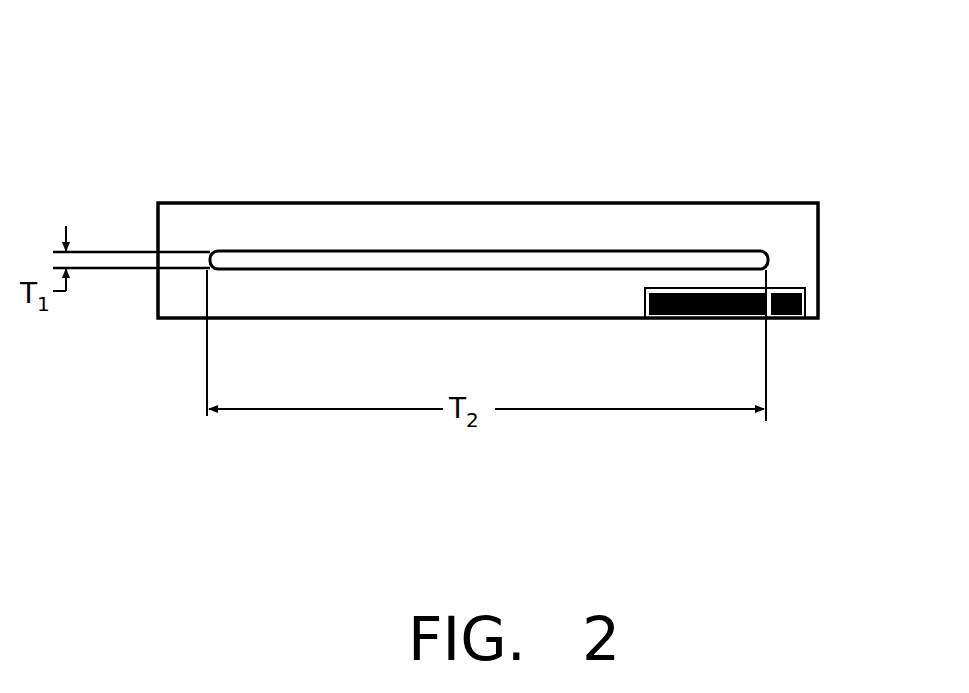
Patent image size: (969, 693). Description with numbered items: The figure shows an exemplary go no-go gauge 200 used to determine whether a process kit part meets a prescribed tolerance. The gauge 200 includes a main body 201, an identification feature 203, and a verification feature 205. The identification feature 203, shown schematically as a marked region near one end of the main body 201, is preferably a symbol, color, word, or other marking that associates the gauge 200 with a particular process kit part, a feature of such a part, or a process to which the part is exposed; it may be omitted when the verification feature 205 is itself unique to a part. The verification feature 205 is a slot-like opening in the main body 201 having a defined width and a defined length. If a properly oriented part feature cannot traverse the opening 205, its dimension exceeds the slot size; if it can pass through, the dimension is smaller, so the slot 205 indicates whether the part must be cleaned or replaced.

The go no-go gauge 200 is at (674, 168).
The main body 201 is at (185, 318).
The identification feature 203 is at (787, 305).
The verification feature 205 is at (280, 249).